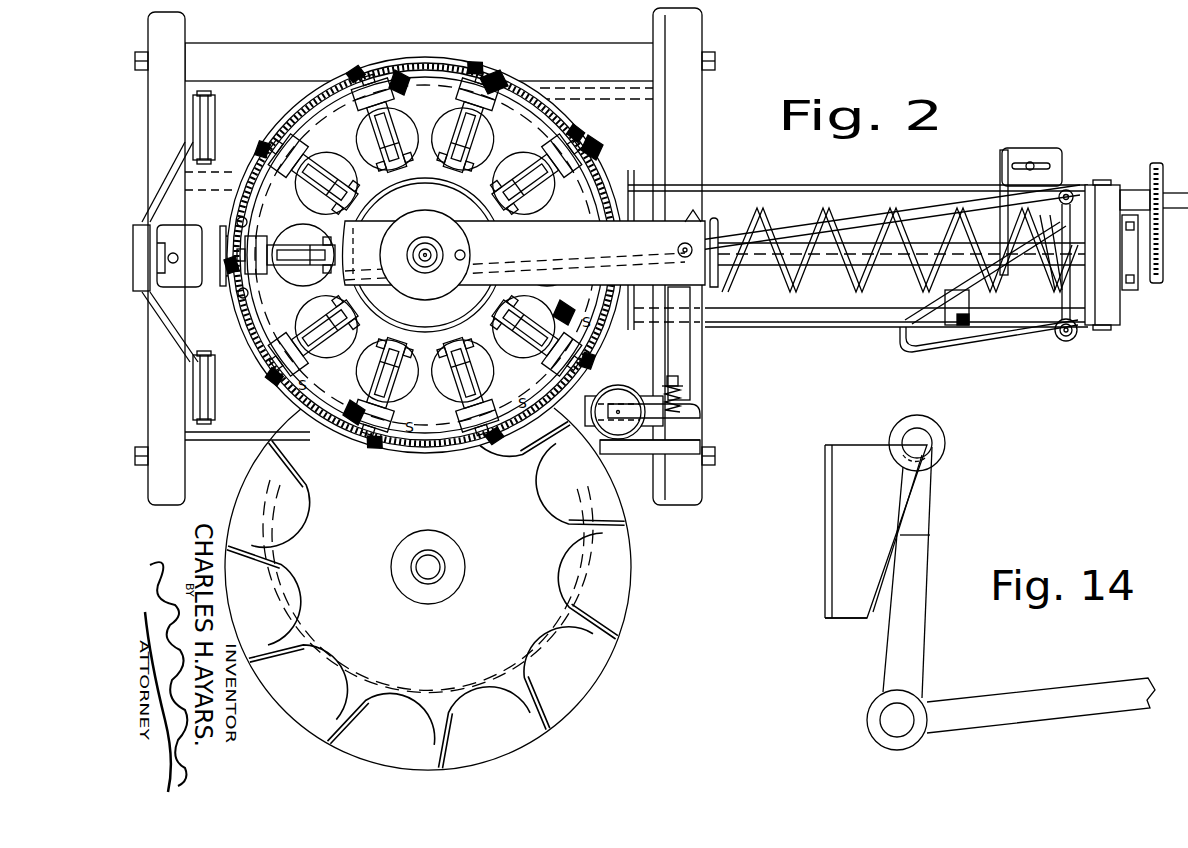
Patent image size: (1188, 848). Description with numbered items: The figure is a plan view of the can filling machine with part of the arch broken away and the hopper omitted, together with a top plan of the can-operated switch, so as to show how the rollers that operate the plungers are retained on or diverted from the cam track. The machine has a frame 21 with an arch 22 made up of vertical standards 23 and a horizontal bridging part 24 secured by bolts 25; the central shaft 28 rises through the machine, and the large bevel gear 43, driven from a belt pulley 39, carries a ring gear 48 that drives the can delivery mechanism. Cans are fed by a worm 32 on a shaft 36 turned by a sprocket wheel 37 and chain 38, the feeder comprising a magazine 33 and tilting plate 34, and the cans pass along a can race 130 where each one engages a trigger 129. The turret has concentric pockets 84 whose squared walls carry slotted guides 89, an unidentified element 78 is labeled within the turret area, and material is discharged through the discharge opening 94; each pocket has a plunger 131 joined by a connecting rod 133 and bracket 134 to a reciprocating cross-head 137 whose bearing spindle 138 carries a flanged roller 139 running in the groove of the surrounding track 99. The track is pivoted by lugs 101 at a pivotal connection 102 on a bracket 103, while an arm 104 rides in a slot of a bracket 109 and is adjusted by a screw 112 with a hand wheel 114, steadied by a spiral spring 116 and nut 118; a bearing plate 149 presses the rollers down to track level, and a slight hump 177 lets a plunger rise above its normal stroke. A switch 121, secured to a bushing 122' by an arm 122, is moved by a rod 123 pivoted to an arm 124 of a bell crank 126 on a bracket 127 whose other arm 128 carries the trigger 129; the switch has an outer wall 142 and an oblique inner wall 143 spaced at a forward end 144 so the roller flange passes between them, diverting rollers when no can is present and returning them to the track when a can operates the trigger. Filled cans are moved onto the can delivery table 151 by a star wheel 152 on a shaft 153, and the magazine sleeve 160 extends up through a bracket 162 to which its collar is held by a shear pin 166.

In FIG. 2, the frame 21 is at (702, 112).
In FIG. 2, the arch 22 is at (674, 240).
In FIG. 2, the vertical standards 23 is at (143, 292).
In FIG. 2, the horizontal bridging part 24 is at (188, 236).
In FIG. 2, the bolts 25 is at (679, 343).
In FIG. 2, the shaft 28 is at (430, 250).
In FIG. 2, the worm 32 is at (842, 262).
In FIG. 2, the magazine 33 is at (1000, 190).
In FIG. 2, the tilting plate 34 is at (952, 292).
In FIG. 2, the shaft 36 is at (1075, 262).
In FIG. 2, the sprocket wheel 37 is at (1138, 274).
In FIG. 2, the chain 38 is at (1163, 232).
In FIG. 2, the pulley 39 is at (1174, 163).
In FIG. 2, the large bevel gear 43 is at (448, 456).
In FIG. 2, the ring gear 48 is at (498, 448).
In FIG. 2, the cutter holder 78 is at (448, 366).
In FIG. 2, the pockets 84 is at (427, 158).
In FIG. 2, the slotted guides 89 is at (383, 480).
In FIG. 2, the discharge opening 94 is at (570, 202).
In FIG. 2, the track 99 is at (420, 454).
In FIG. 2, the lugs 101 is at (195, 416).
In FIG. 2, the pivotal connection 102 is at (200, 358).
In FIG. 2, the bracket 103 is at (175, 345).
In FIG. 2, the arm 104 is at (624, 400).
In FIG. 2, the bracket 109 is at (700, 416).
In FIG. 2, the screw 112 is at (565, 462).
In FIG. 2, the hand wheel 114 is at (620, 452).
In FIG. 2, the spiral spring 116 is at (682, 398).
In FIG. 2, the nut 118 is at (687, 371).
In FIG. 14, the switch 121 is at (876, 531).
In FIG. 2, the arm 122 is at (226, 265).
In FIG. 14, the arm 122 is at (920, 598).
In FIG. 14, the bushing 122' is at (943, 443).
In FIG. 2, the rod 123 is at (785, 232).
In FIG. 14, the rod 123 is at (1036, 700).
In FIG. 2, the arm 124 is at (1073, 199).
In FIG. 2, the bell crank 126 is at (1076, 335).
In FIG. 2, the bracket 127 is at (1045, 310).
In FIG. 2, the arm 128 is at (1005, 332).
In FIG. 2, the trigger 129 is at (882, 316).
In FIG. 2, the can race 130 is at (805, 290).
In FIG. 2, the plunger 131 is at (405, 162).
In FIG. 2, the connecting rod 133 is at (395, 130).
In FIG. 2, the bracket 134 is at (498, 130).
In FIG. 2, the cross-head 137 is at (400, 72).
In FIG. 2, the bearing spindle 138 is at (500, 78).
In FIG. 2, the flanged roller 139 is at (586, 135).
In FIG. 14, the outer wall 142 is at (825, 534).
In FIG. 14, the oblique inner wall 143 is at (930, 535).
In FIG. 14, the forward end 144 is at (847, 620).
In FIG. 2, the bearing plate 149 is at (606, 128).
In FIG. 2, the can delivery table 151 is at (428, 589).
In FIG. 2, the star wheel 152 is at (428, 586).
In FIG. 2, the shaft 153 is at (427, 572).
In FIG. 2, the sleeve 160 is at (425, 268).
In FIG. 2, the bracket 162 is at (425, 242).
In FIG. 2, the shear pin 166 is at (478, 245).
In FIG. 2, the hump 177 is at (606, 436).